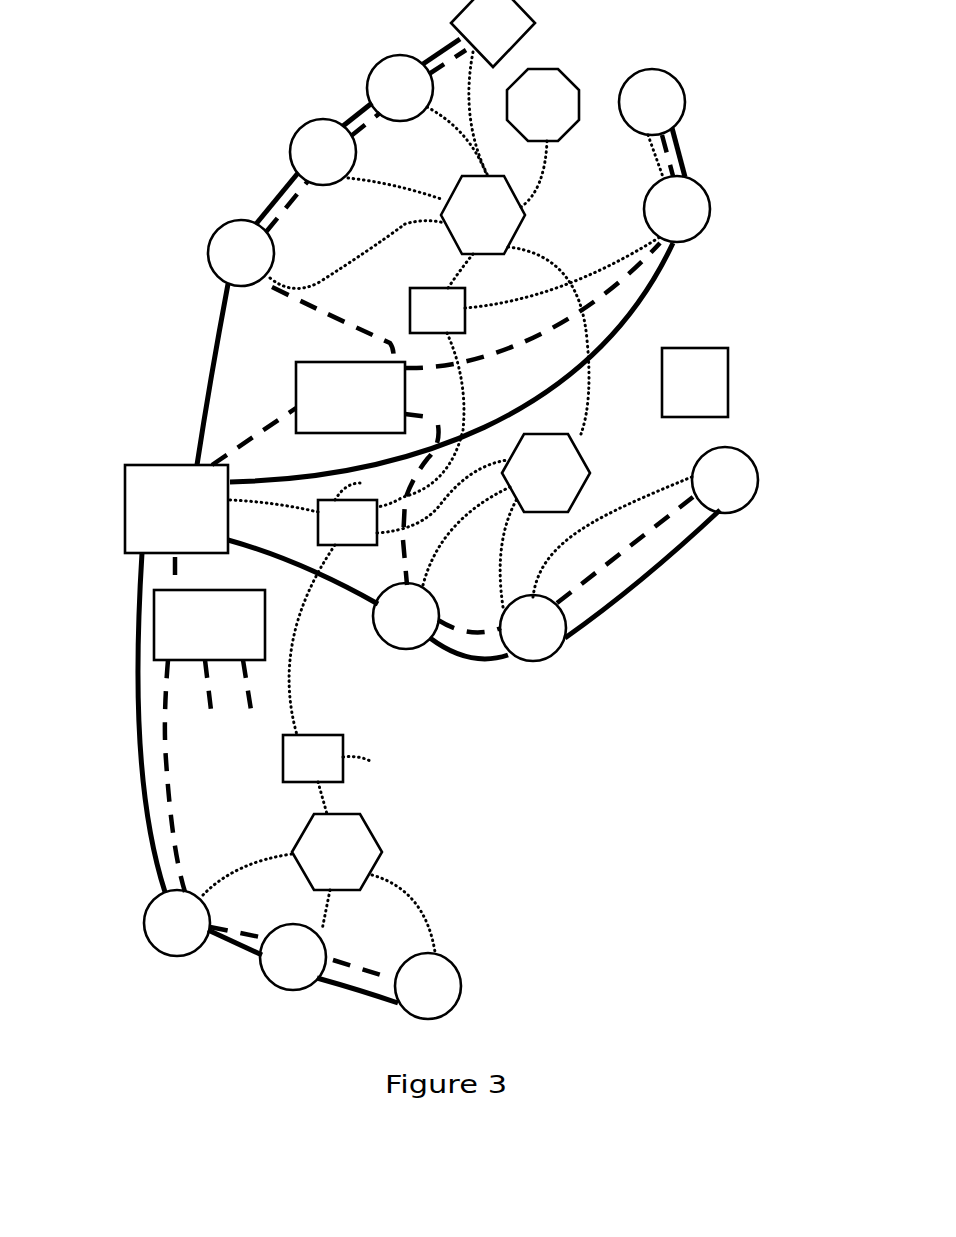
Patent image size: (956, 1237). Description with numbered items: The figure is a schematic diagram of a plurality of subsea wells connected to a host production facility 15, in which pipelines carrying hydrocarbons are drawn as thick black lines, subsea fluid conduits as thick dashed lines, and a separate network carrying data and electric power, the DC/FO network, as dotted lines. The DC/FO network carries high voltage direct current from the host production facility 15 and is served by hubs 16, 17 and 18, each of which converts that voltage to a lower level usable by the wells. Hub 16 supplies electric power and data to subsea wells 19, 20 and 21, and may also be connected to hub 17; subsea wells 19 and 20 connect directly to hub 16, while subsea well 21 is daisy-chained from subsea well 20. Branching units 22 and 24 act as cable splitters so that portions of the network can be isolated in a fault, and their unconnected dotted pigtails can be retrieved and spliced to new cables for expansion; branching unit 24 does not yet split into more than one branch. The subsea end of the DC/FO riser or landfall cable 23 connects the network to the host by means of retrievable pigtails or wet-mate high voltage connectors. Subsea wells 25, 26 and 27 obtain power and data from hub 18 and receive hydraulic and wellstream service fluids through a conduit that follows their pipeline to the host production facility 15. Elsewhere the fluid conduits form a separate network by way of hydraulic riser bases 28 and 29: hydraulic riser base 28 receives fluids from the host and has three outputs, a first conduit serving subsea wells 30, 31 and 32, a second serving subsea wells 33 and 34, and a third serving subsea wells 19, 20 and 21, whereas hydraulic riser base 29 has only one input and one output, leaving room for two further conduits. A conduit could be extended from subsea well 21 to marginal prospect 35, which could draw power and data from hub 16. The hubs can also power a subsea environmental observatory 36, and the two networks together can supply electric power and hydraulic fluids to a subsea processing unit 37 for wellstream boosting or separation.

The host production facility 15 is at (163, 501).
The hub 16 is at (532, 482).
The hub 17 is at (469, 223).
The hub 18 is at (323, 860).
The subsea well 19 is at (392, 627).
The subsea well 20 is at (519, 639).
The subsea well 21 is at (711, 491).
The branching unit 22 is at (423, 322).
The DC/FO riser or landfall cable 23 is at (333, 534).
The branching unit 24 is at (299, 771).
The subsea well 25 is at (163, 934).
The subsea well 26 is at (279, 968).
The subsea well 27 is at (414, 997).
The hydraulic riser base 28 is at (336, 421).
The hydraulic riser base 29 is at (196, 651).
The subsea well 30 is at (227, 265).
The subsea well 31 is at (309, 164).
The subsea well 32 is at (386, 100).
The subsea well 33 is at (663, 220).
The subsea well 34 is at (638, 113).
The marginal prospect 35 is at (681, 382).
The subsea environmental observatory 36 is at (529, 111).
The subsea processing unit 37 is at (479, 36).